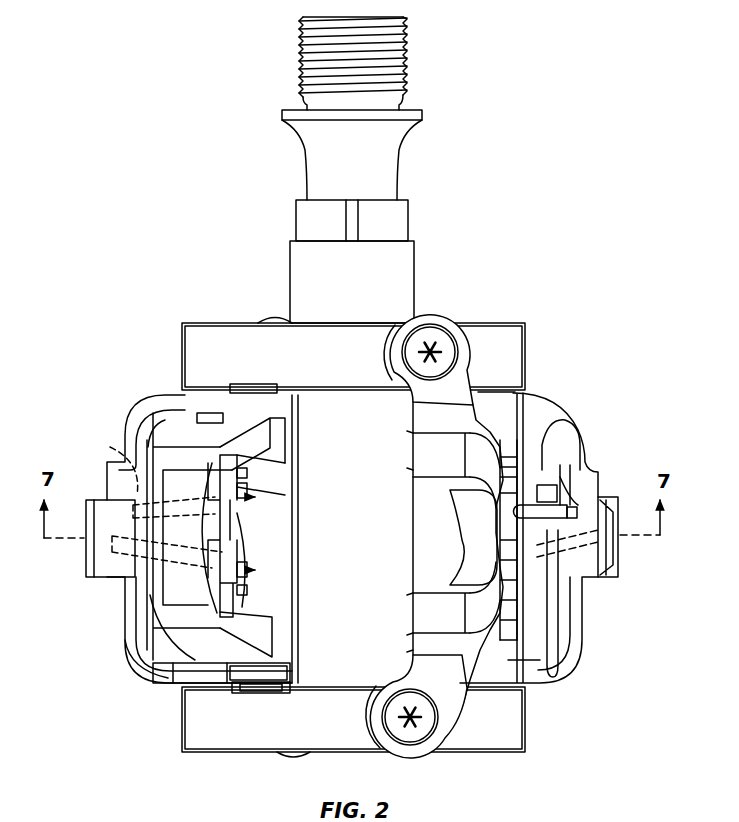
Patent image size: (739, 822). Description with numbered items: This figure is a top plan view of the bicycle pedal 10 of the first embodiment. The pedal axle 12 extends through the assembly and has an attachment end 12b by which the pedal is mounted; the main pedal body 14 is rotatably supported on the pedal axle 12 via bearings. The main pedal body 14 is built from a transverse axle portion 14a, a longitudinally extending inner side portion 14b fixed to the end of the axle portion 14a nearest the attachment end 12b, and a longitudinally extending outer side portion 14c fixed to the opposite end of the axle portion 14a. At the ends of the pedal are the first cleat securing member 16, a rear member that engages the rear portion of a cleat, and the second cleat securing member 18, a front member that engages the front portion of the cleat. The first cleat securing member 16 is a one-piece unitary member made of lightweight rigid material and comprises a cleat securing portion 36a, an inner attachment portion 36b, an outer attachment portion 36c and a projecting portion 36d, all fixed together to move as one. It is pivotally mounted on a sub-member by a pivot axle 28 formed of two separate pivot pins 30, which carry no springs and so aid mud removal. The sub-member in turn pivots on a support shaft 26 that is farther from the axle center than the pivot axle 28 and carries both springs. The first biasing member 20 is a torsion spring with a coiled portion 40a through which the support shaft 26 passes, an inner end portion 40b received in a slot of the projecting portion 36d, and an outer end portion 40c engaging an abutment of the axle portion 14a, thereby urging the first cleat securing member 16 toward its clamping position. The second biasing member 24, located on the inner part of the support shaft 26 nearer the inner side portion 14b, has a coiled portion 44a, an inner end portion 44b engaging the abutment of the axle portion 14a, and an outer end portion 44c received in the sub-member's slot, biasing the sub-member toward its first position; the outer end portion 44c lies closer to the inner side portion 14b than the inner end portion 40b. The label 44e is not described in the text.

The bicycle pedal 10 is at (566, 260).
The pedal axle 12 is at (404, 162).
The attachment end 12b is at (408, 62).
The main pedal body 14 is at (390, 521).
The axle portion 14a is at (332, 675).
The inner side portion 14b is at (488, 340).
The outer side portion 14c is at (512, 708).
The first cleat securing member 16 is at (150, 432).
The second cleat securing member 18 is at (494, 427).
The first biasing member 20 is at (240, 566).
The second biasing member 24 is at (245, 509).
The support shaft 26 is at (540, 668).
The pivot axle 28 is at (261, 697).
The pivot pins 30 is at (248, 385).
The cleat securing portion 36a is at (158, 597).
The inner attachment portion 36b is at (152, 432).
The outer attachment portion 36c is at (160, 648).
The projecting portion 36d is at (84, 566).
The coiled portion 40a is at (262, 632).
The inner end portion 40b is at (112, 553).
The outer end portion 40c is at (262, 651).
The coiled portion 44a is at (280, 470).
The inner end portion 44b is at (280, 452).
The outer end portion 44c is at (110, 447).
The engagement member pin 44e is at (562, 512).